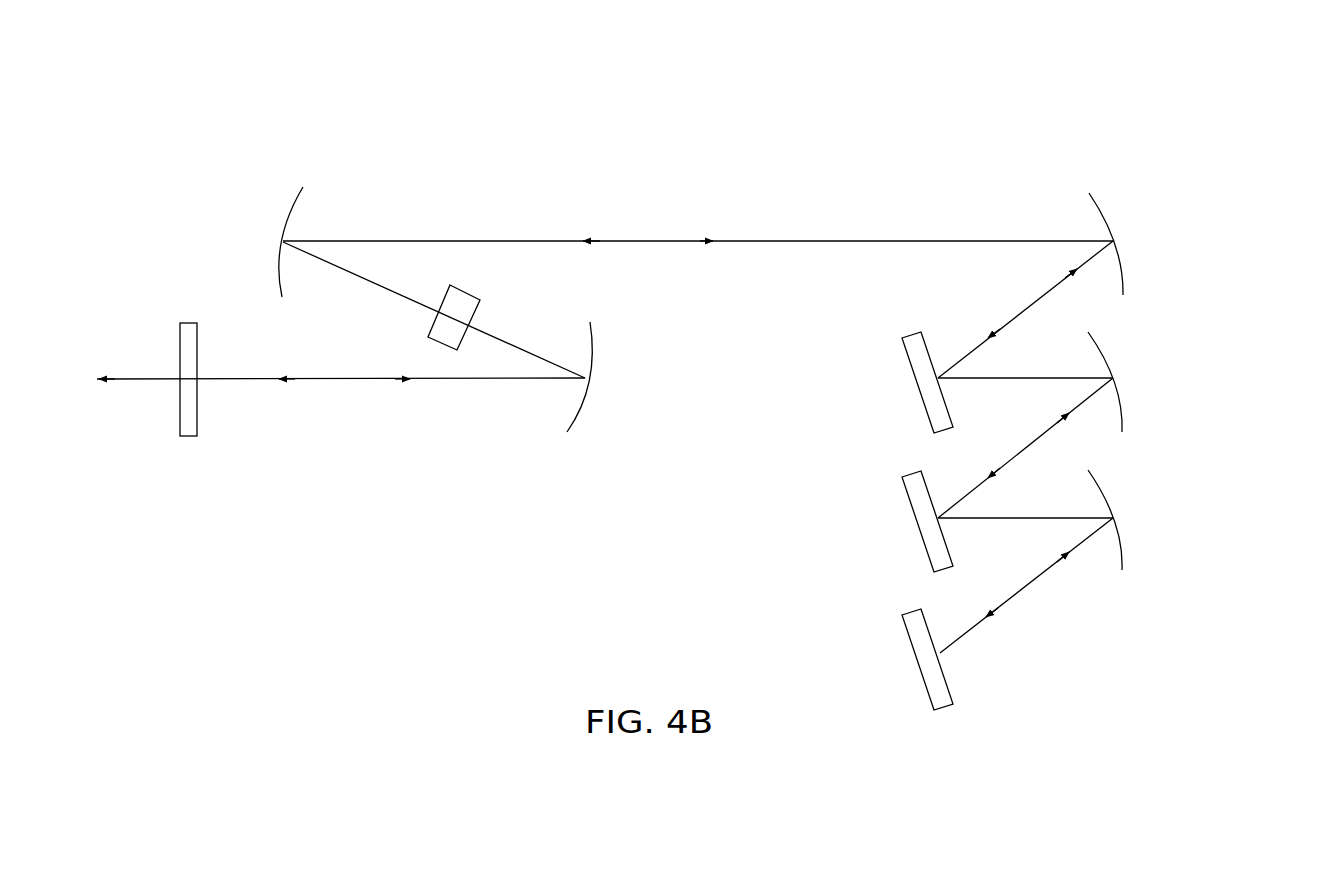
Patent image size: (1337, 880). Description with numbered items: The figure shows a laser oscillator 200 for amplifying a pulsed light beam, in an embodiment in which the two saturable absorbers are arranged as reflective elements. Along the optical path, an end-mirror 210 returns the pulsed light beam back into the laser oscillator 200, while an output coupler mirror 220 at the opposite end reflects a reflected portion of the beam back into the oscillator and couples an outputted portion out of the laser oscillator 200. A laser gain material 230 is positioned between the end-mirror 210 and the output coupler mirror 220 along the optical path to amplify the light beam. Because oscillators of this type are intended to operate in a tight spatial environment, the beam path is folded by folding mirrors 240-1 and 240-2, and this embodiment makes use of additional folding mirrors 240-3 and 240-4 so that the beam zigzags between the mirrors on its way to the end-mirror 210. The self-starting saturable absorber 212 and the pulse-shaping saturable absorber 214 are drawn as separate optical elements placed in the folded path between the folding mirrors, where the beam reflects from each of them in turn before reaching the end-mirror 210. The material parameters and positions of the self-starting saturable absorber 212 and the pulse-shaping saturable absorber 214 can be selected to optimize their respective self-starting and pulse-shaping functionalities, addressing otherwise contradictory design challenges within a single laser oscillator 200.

The laser oscillator 200 is at (416, 114).
The folding mirror 240-1 is at (293, 209).
The folding mirror 240-2 is at (1105, 212).
The folding mirror 240-3 is at (1105, 350).
The folding mirror 240-4 is at (1105, 488).
The laser gain material 230 is at (470, 293).
The output coupler mirror 220 is at (197, 414).
The self-starting saturable absorber 212 is at (905, 375).
The pulse-shaping saturable absorber 214 is at (905, 513).
The end-mirror 210 is at (945, 678).